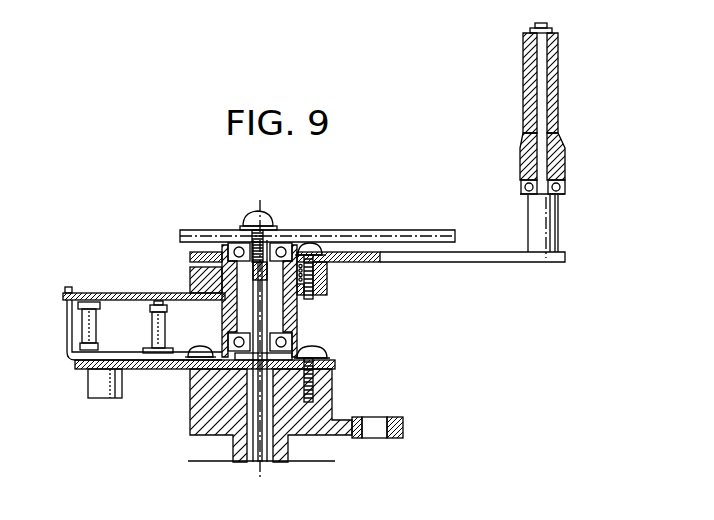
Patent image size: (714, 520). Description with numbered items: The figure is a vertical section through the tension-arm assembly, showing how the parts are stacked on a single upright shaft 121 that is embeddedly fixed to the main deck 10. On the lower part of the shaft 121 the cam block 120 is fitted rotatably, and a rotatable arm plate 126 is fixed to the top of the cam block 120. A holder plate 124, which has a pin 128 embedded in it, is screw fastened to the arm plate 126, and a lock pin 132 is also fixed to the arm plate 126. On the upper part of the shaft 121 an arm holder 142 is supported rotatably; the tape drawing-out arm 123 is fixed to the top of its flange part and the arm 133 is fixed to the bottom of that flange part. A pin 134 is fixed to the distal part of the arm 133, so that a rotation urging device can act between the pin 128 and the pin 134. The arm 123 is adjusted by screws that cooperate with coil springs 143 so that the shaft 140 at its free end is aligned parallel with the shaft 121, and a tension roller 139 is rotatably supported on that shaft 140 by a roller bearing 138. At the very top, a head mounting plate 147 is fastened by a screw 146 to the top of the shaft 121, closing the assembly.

The main deck 10 is at (197, 461).
The cam block 120 is at (191, 420).
The shaft 121 is at (258, 463).
The tape drawing-out arm 123 is at (463, 259).
The holder plate 124 is at (128, 360).
The arm plate 126 is at (328, 361).
The pin 128 is at (150, 333).
The lock pin 132 is at (90, 386).
The arm 133 is at (125, 293).
The pin 134 is at (83, 325).
The roller bearing 138 is at (522, 182).
The tension roller 139 is at (524, 82).
The shaft 140 is at (558, 223).
The arm holder 142 is at (189, 276).
The coil springs 143 is at (329, 264).
The screw 146 is at (250, 212).
The head mounting plate 147 is at (412, 226).